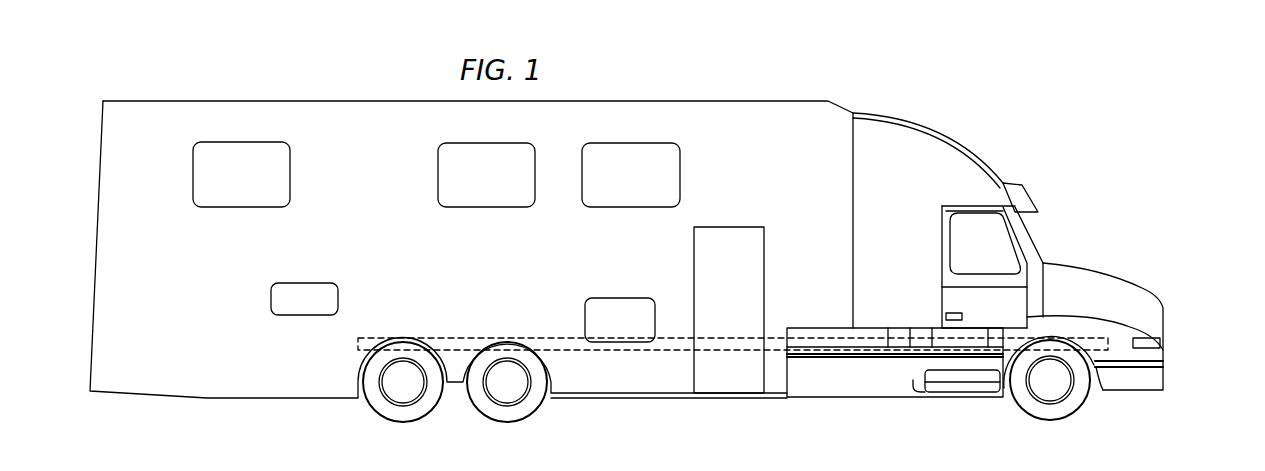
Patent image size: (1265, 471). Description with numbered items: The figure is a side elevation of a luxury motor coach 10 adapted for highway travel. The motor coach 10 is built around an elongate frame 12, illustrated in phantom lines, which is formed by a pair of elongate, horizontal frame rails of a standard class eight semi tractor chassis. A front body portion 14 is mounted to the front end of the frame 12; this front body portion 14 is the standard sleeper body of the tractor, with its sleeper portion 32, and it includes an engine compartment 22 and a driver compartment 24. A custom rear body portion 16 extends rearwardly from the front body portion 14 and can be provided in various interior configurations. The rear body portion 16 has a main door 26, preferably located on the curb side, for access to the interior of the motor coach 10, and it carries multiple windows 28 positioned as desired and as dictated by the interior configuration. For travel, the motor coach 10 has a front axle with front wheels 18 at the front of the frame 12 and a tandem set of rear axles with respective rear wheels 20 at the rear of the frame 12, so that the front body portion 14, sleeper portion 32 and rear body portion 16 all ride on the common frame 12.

The luxury motor coach 10 is at (1115, 158).
The frame 12 is at (569, 352).
The front body portion 14 is at (980, 192).
The rear body portion 16 is at (330, 125).
The front wheels 18 is at (1052, 412).
The rear wheels 20 is at (402, 415).
The engine compartment 22 is at (1137, 305).
The driver compartment 24 is at (1005, 253).
The main door 26 is at (731, 367).
The windows 28 is at (206, 157).
The sleeper portion 32 is at (888, 167).